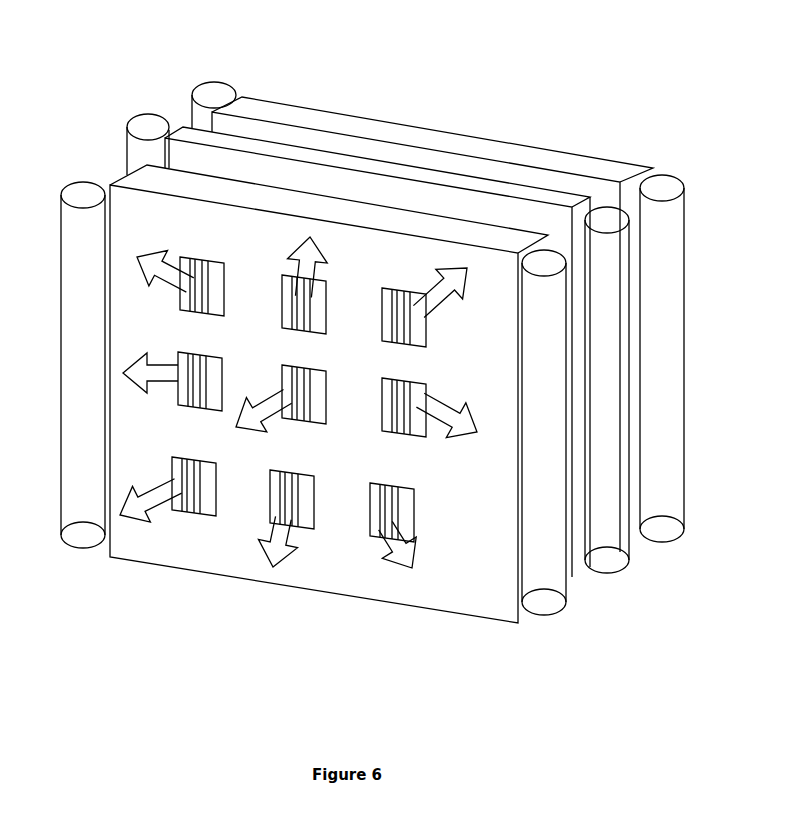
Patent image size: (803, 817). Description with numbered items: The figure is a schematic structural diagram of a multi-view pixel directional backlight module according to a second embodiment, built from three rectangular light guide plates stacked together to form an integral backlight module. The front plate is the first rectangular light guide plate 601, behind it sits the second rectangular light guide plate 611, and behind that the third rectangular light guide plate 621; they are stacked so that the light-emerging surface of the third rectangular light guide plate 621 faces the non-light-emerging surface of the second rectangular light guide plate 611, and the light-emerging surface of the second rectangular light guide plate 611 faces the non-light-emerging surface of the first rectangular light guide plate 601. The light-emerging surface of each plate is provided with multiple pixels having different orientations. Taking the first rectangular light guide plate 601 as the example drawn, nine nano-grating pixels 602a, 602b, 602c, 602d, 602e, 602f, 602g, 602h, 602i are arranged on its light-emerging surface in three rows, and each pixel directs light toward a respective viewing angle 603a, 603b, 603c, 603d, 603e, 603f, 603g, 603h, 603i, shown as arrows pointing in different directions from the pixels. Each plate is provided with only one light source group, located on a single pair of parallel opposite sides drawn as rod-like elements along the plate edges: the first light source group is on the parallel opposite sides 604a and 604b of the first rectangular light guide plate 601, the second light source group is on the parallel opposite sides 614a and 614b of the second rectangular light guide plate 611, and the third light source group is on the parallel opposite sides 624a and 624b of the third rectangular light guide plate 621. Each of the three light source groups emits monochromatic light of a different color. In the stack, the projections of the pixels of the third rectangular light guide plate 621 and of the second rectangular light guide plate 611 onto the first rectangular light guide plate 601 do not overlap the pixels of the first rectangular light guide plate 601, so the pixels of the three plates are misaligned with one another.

The first rectangular light guide plate 601 is at (483, 570).
The second rectangular light guide plate 611 is at (552, 215).
The third rectangular light guide plate 621 is at (604, 197).
The parallel opposite side 604a is at (540, 532).
The parallel opposite side 604b is at (75, 447).
The parallel opposite side 614a is at (610, 525).
The parallel opposite side 614b is at (158, 125).
The parallel opposite side 624a is at (662, 495).
The parallel opposite side 624b is at (218, 100).
The nano-grating pixel 602a is at (162, 243).
The nano-grating pixel 602b is at (315, 262).
The nano-grating pixel 602c is at (458, 285).
The nano-grating pixel 602d is at (133, 370).
The nano-grating pixel 602e is at (262, 397).
The nano-grating pixel 602f is at (472, 415).
The nano-grating pixel 602g is at (133, 490).
The nano-grating pixel 602h is at (262, 540).
The nano-grating pixel 602i is at (452, 547).
The viewing angle 603a is at (215, 297).
The viewing angle 603b is at (317, 320).
The viewing angle 603c is at (427, 338).
The viewing angle 603d is at (180, 397).
The viewing angle 603e is at (322, 378).
The viewing angle 603f is at (388, 404).
The viewing angle 603g is at (207, 467).
The viewing angle 603h is at (307, 485).
The viewing angle 603i is at (412, 492).